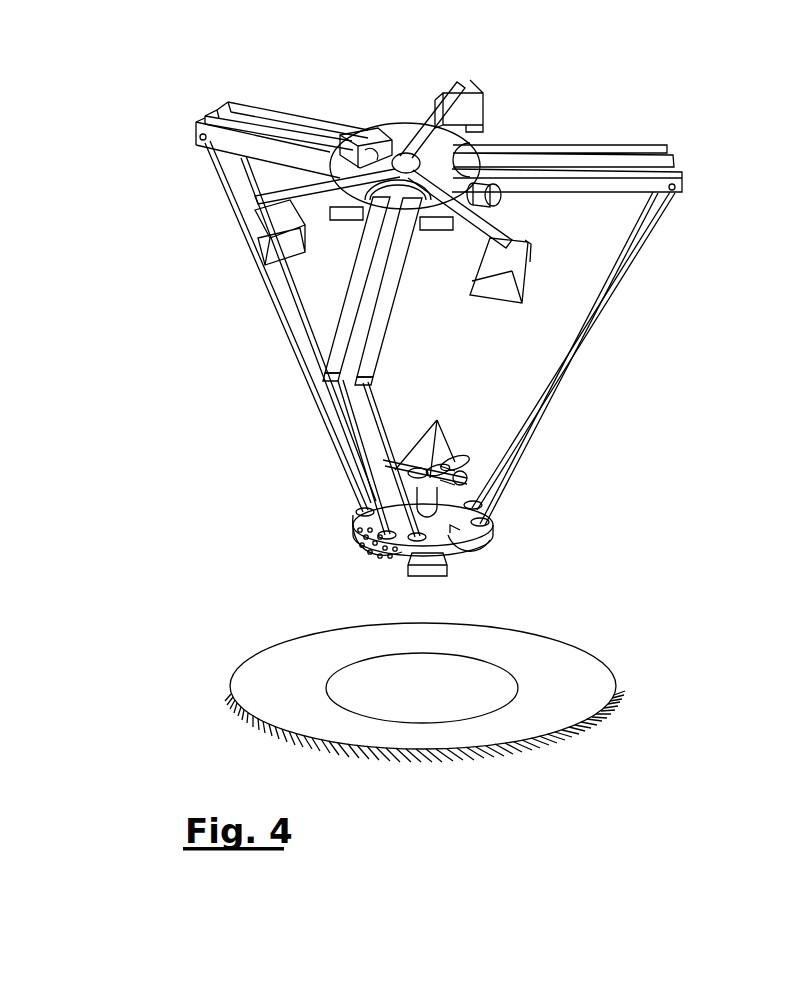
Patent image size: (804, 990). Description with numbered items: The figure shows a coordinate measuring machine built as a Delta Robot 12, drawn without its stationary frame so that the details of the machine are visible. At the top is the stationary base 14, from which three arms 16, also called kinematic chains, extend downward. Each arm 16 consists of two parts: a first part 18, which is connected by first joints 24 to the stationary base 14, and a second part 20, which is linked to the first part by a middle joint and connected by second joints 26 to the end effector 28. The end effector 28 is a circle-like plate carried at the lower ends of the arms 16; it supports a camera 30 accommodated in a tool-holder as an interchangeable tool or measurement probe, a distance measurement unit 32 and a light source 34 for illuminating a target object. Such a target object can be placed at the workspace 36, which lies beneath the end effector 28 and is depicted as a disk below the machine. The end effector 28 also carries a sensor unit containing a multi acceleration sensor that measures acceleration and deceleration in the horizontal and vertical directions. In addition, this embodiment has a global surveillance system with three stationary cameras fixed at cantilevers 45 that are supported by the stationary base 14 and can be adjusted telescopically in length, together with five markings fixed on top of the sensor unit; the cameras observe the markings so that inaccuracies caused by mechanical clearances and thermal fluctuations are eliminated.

The Delta Robot 12 is at (160, 137).
The stationary base 14 is at (400, 118).
The arms 16 is at (334, 293).
The first part of arm 18 is at (560, 181).
The second part of arm 20 is at (682, 185).
The first joints 24 is at (493, 200).
The second joints 26 is at (493, 521).
The end effector 28 is at (487, 533).
The camera 30 is at (408, 568).
The distance measurement unit 32 is at (367, 547).
The light source 34 is at (472, 550).
The workspace 36 is at (567, 709).
The cantilevers 45 is at (423, 128).